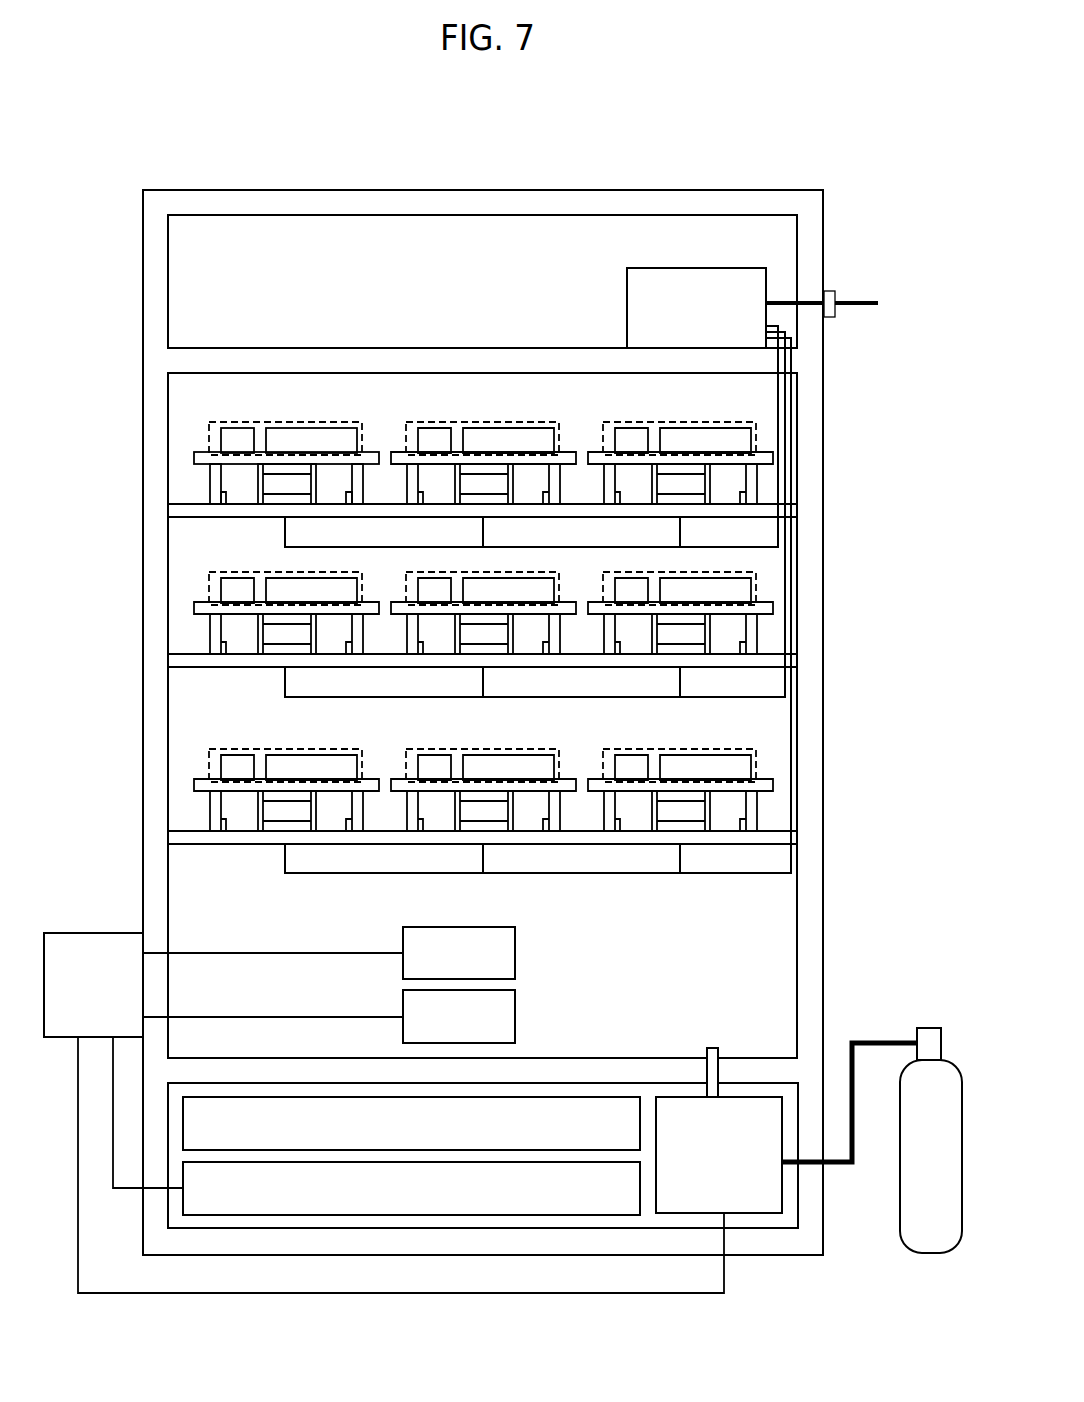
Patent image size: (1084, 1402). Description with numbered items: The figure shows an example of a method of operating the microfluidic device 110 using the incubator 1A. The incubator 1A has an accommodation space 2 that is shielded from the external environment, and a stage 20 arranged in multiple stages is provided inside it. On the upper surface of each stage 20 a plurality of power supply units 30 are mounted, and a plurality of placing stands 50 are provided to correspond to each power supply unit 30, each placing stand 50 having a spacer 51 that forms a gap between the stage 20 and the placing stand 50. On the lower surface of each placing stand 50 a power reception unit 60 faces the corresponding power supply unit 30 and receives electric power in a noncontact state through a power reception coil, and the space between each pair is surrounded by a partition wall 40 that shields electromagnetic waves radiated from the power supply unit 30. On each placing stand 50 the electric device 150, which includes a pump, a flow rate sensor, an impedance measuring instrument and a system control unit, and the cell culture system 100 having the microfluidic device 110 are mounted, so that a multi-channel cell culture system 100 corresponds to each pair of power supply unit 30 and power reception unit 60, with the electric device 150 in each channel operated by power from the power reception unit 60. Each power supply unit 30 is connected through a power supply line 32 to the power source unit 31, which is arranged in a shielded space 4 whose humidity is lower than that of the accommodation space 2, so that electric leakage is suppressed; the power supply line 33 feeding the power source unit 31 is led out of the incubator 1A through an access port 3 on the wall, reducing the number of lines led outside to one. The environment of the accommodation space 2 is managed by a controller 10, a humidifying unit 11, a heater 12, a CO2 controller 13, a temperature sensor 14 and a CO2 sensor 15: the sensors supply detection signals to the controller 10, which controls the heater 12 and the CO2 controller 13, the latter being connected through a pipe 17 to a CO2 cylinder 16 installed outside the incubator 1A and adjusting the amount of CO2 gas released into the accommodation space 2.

The incubator 1A is at (742, 189).
The accommodation space 2 is at (186, 426).
The access port 3 is at (832, 290).
The shielded space 4 is at (186, 278).
The controller 10 is at (97, 932).
The humidifying unit 11 is at (584, 1110).
The heater 12 is at (627, 1170).
The CO2 controller 13 is at (757, 1105).
The temperature sensor 14 is at (517, 955).
The CO2 sensor 15 is at (517, 1018).
The CO2 cylinder 16 is at (932, 1254).
The pipe 17 is at (881, 1040).
The stage 20 is at (186, 504).
The power supply unit 30 is at (275, 504).
The power source unit 31 is at (627, 314).
The power supply line 32 is at (578, 548).
The power supply line 33 is at (866, 308).
The partition wall 40 is at (256, 497).
The placing stand 50 is at (366, 453).
The spacer 51 is at (218, 504).
The power reception unit 60 is at (296, 470).
The cell culture system 100 is at (360, 410).
The microfluidic device 110 is at (240, 428).
The electric device 150 is at (316, 428).